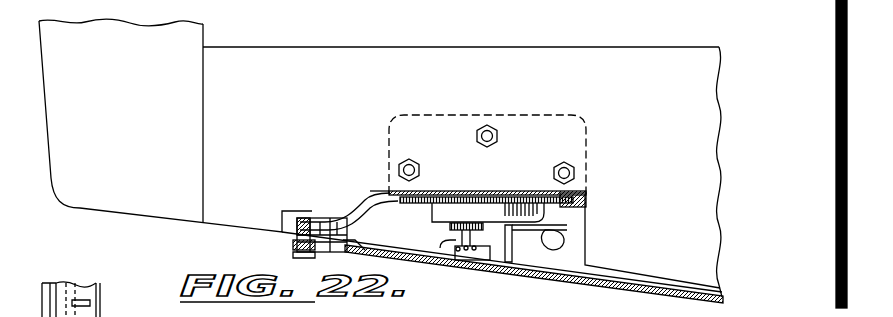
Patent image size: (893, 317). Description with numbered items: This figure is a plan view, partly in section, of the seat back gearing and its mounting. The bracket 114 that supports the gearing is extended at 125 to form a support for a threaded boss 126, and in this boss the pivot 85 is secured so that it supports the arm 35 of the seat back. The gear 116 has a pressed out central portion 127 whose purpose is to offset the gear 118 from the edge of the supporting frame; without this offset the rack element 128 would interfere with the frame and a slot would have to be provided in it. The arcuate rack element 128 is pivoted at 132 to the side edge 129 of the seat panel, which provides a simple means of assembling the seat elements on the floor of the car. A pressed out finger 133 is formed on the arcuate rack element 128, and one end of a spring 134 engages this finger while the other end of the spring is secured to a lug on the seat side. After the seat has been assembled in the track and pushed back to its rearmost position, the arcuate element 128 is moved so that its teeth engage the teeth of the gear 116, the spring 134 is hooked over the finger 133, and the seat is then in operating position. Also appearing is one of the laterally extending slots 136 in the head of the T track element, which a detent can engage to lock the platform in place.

The bracket 114 is at (381, 195).
The gear 116 is at (484, 196).
The extension of the bracket 125 is at (350, 216).
The threaded boss 126 is at (310, 222).
The pressed out central portion 127 is at (432, 212).
The gear 118 is at (455, 231).
The pivot 132 is at (465, 262).
The arcuate rack element 128 is at (518, 264).
The spring 134 is at (578, 212).
The pressed out finger 133 is at (575, 240).
The side edge 129 is at (645, 290).
The arm 35 is at (340, 249).
The pivot 85 is at (298, 243).
The laterally extending slots 136 is at (88, 302).